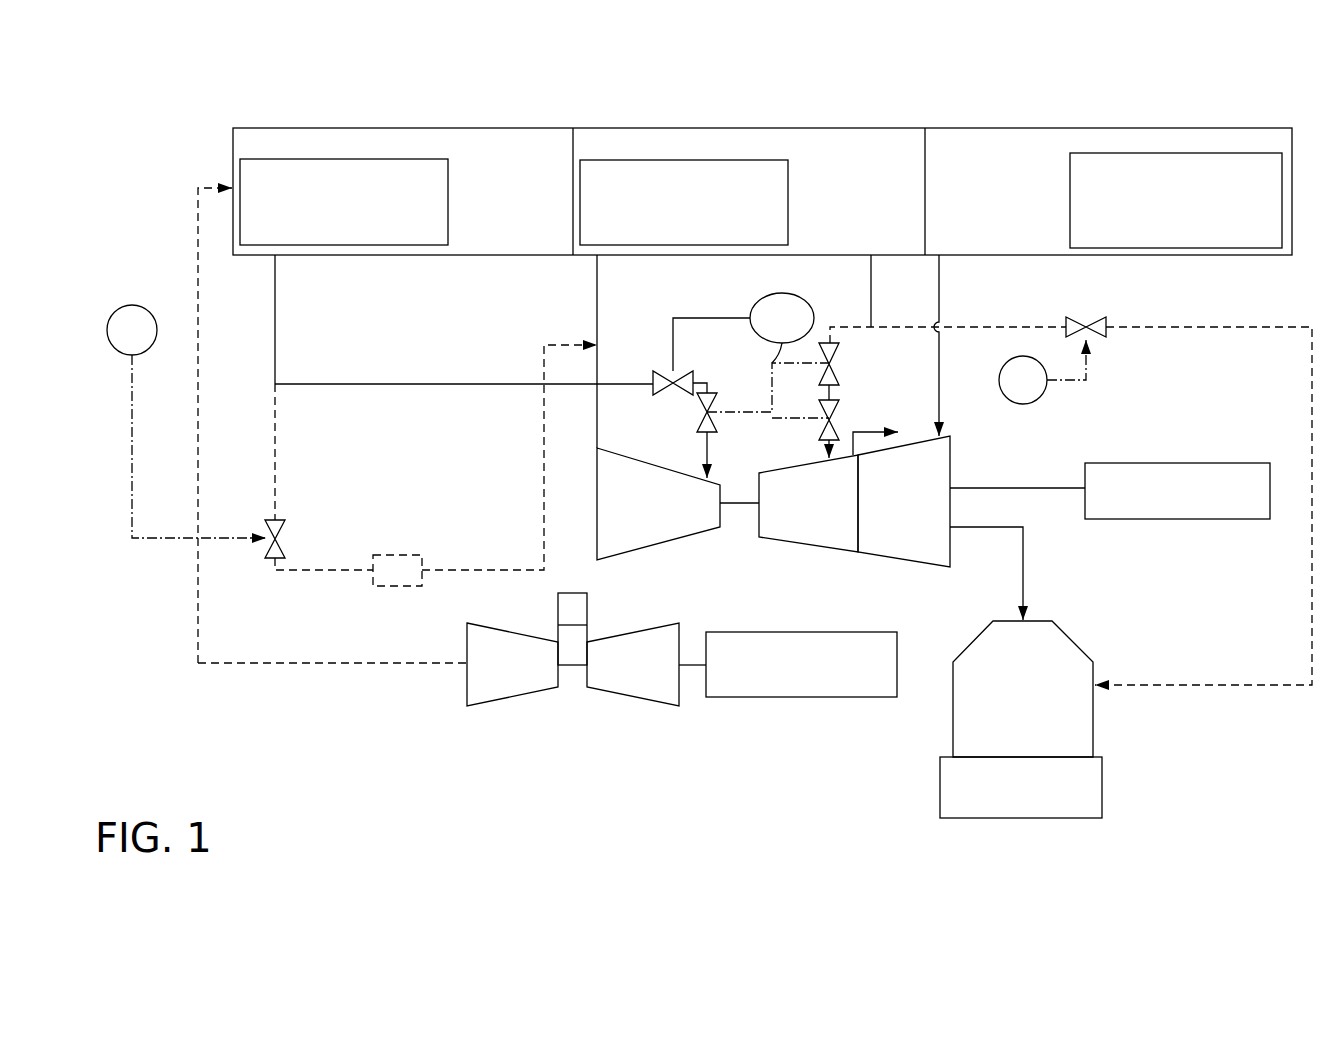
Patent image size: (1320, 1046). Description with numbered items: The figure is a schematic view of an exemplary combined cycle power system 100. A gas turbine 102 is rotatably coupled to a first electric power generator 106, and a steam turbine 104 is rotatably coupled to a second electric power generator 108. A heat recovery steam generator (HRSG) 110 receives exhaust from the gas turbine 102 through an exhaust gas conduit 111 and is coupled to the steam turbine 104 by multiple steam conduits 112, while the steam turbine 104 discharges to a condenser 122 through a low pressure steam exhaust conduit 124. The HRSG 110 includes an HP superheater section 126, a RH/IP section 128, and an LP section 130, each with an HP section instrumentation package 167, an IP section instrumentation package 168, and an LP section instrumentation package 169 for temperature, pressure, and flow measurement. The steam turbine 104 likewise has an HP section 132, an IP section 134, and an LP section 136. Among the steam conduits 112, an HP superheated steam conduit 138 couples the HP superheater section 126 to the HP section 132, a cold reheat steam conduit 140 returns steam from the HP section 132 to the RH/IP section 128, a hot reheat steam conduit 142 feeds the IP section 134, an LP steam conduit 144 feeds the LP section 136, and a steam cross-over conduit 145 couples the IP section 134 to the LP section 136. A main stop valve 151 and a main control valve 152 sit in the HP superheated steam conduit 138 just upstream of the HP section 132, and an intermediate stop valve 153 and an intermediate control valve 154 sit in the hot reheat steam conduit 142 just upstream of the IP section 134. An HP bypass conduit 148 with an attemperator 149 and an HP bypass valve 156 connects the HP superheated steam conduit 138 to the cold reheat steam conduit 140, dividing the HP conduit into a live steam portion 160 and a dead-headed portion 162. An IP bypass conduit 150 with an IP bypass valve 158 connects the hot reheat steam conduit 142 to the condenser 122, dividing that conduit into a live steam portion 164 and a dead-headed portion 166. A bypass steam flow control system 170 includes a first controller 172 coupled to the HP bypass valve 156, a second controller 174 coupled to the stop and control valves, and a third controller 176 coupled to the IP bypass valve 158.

The combined cycle power system 100 is at (215, 108).
The gas turbine 102 is at (567, 705).
The steam turbine 104 is at (773, 529).
The first electric power generator 106 is at (801, 664).
The second electric power generator 108 is at (1110, 491).
The heat recovery steam generator (HRSG) 110 is at (372, 118).
The exhaust gas conduit 111 is at (260, 664).
The steam conduits 112 is at (290, 270).
The condenser 122 is at (1021, 719).
The low pressure steam exhaust conduit 124 is at (1023, 558).
The HP superheater section 126 is at (508, 171).
The RH/IP section 128 is at (845, 157).
The LP section 130 is at (1000, 157).
The HP section 132 is at (678, 504).
The IP section 134 is at (808, 503).
The LP section 136 is at (904, 501).
The HP superheated steam conduit 138 is at (312, 370).
The cold reheat (CRH) steam conduit 140 is at (597, 320).
The hot reheat (HRH) steam conduit 142 is at (860, 322).
The LP steam conduit 144 is at (940, 322).
The steam cross-over conduit 145 is at (862, 426).
The HP bypass conduit 148 is at (544, 420).
The attemperator 149 is at (385, 588).
The IP bypass conduit 150 is at (1205, 327).
The main stop valve (MSV) 151 is at (684, 374).
The main control valve (MCV) 152 is at (697, 418).
The intermediate stop valve (ISV) 153 is at (832, 362).
The intermediate control valve (ICV) 154 is at (833, 402).
The HP bypass valve 156 is at (275, 518).
The IP bypass valve 158 is at (1100, 320).
The live steam portion 160 is at (275, 305).
The dead-headed portion 162 is at (440, 384).
The live steam portion 164 is at (872, 280).
The dead-headed portion 166 is at (832, 333).
The HP section instrumentation package 167 is at (344, 202).
The IP section instrumentation package 168 is at (684, 202).
The LP section instrumentation package 169 is at (1176, 200).
The bypass steam flow control system 170 is at (1142, 362).
The first controller 172 is at (132, 305).
The second controller 174 is at (758, 298).
The third controller 176 is at (1018, 403).